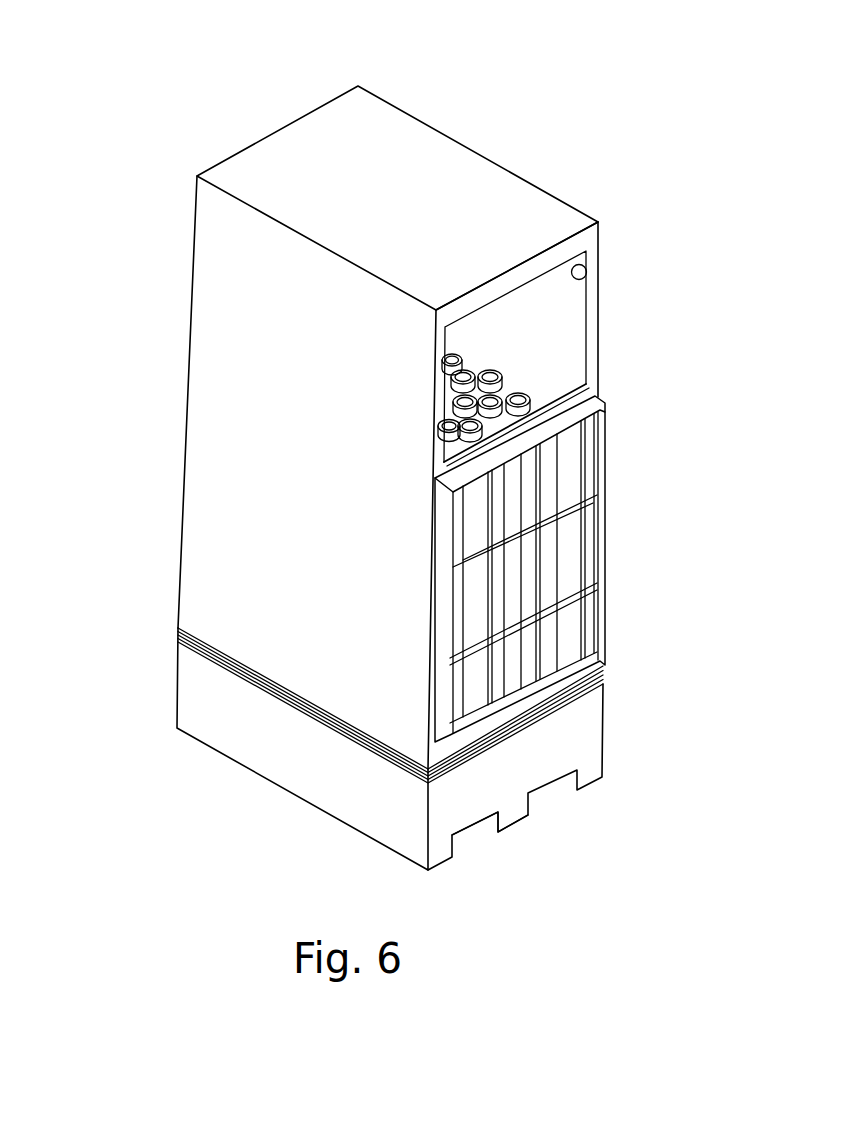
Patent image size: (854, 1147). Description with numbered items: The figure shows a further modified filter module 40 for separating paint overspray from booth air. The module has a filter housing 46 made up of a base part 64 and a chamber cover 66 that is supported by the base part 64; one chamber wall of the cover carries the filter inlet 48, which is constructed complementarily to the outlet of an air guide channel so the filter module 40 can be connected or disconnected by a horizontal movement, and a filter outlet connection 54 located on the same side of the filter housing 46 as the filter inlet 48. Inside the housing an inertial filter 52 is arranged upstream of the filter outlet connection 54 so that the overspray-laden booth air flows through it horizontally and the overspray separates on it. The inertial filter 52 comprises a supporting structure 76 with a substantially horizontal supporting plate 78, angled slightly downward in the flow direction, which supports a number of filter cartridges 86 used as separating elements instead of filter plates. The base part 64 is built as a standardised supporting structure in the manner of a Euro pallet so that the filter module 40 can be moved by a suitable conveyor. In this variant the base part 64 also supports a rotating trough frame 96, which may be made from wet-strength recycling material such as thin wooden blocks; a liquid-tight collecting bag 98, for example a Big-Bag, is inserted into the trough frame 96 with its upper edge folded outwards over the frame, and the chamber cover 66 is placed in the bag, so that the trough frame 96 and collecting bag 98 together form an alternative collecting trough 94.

The filter module 40 is at (438, 123).
The filter housing 46 is at (469, 184).
The filter inlet 48 is at (588, 267).
The inertial filter 52 is at (570, 548).
The filter outlet connection 54 is at (600, 466).
The base part 64 is at (490, 818).
The chamber cover 66 is at (195, 372).
The supporting structure 76 is at (520, 375).
The supporting plate 78 is at (538, 397).
The filter cartridges 86 is at (452, 361).
The collecting trough 94 is at (210, 644).
The trough frame 96 is at (569, 732).
The collecting bag 98 is at (303, 710).